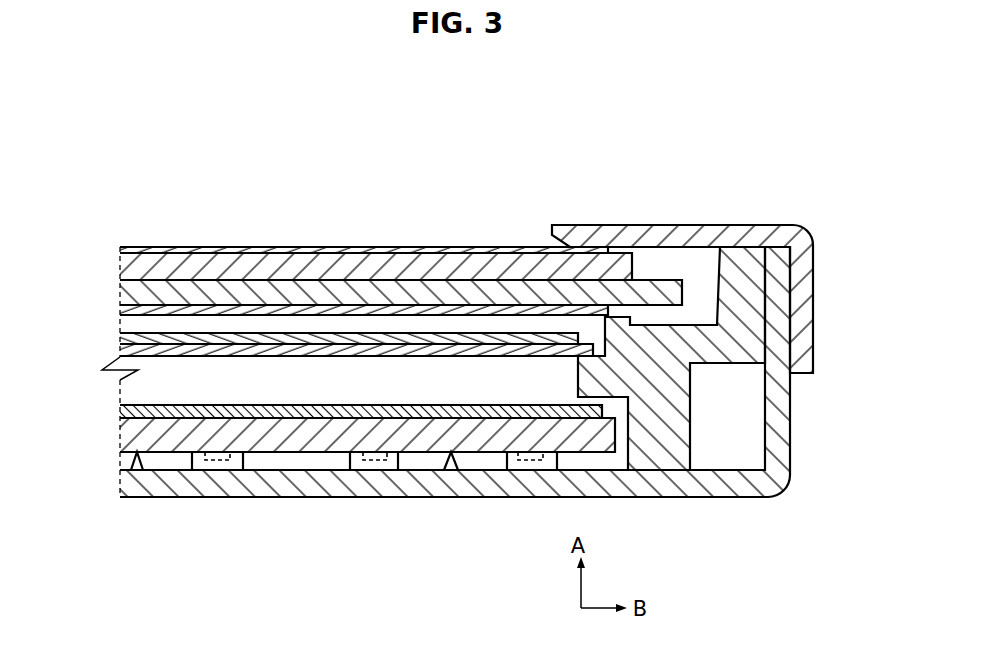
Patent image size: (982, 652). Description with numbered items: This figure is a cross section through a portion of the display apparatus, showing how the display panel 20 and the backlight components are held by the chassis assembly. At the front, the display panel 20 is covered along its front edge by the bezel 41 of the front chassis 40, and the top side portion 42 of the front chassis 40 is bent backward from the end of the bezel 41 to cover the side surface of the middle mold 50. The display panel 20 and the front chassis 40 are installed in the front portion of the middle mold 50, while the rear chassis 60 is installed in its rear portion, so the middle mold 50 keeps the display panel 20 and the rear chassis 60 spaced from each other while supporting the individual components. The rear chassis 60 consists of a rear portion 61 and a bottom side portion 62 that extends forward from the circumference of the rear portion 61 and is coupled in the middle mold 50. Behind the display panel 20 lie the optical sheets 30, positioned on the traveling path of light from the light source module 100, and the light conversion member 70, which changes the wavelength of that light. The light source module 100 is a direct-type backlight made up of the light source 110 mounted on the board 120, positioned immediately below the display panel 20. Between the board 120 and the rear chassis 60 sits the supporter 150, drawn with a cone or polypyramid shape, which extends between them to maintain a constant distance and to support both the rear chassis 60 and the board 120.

The display panel 20 is at (107, 266).
The optical sheets 30 is at (107, 348).
The front chassis 40 is at (718, 261).
The bezel 41 is at (725, 240).
The top side portion 42 is at (837, 282).
The middle mold 50 is at (743, 323).
The rear chassis 60 is at (491, 417).
The rear portion 61 is at (725, 490).
The bottom side portion 62 is at (814, 395).
The light conversion member 70 is at (311, 412).
The light source module 100 is at (367, 500).
The light source 110 is at (376, 462).
The board 120 is at (298, 445).
The supporter 150 is at (451, 484).